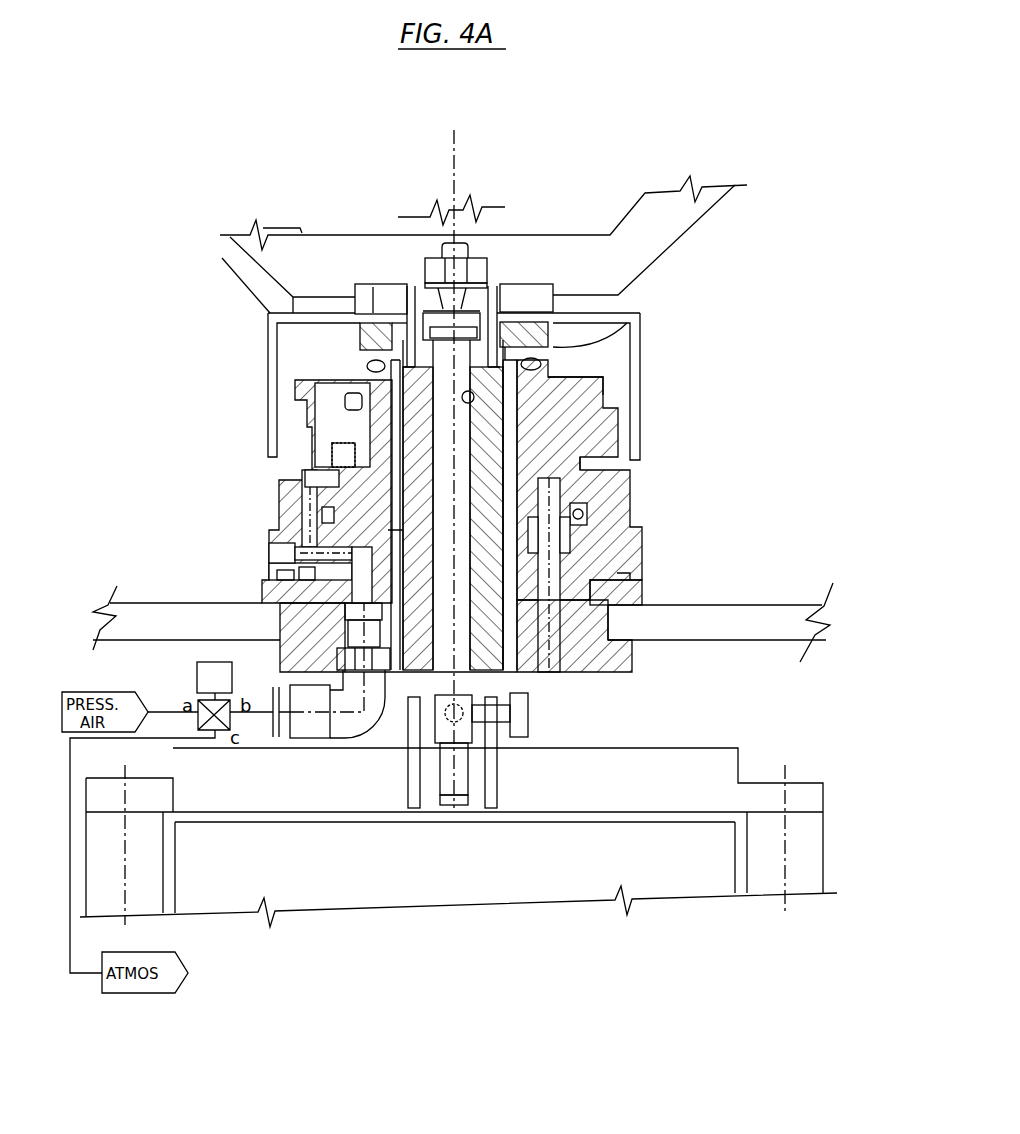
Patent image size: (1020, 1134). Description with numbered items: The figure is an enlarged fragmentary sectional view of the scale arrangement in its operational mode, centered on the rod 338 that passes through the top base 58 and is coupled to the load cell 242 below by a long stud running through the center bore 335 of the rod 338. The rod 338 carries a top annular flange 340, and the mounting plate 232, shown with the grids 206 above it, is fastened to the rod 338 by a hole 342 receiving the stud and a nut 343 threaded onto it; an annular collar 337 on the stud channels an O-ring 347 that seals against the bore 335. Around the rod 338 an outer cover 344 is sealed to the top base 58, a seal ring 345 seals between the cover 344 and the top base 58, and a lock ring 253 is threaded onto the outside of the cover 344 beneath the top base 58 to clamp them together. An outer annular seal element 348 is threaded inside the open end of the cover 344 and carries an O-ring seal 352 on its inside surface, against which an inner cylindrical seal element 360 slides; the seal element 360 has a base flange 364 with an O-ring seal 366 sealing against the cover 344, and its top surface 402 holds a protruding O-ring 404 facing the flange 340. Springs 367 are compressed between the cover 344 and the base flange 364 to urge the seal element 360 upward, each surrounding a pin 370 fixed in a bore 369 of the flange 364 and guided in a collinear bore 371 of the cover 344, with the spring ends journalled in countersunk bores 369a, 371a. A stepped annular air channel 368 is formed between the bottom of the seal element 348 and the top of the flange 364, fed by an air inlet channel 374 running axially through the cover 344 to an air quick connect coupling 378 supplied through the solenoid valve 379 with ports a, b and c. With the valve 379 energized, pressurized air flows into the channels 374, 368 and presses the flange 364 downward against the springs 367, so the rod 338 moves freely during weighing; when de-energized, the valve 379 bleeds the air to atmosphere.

The grids 206 is at (700, 222).
The protruding O-ring 404 is at (303, 322).
The O-ring seal 352 is at (340, 372).
The outer annular seal element 348 is at (352, 440).
The top annular flange 340 is at (636, 316).
The nut 343 is at (418, 363).
The annular collar 337 is at (398, 357).
The top surface 402 is at (373, 287).
The hole 342 is at (464, 290).
The O-ring 347 is at (387, 378).
The base flange 364 is at (618, 467).
The mounting plate 232 is at (505, 347).
The center bore 335 is at (497, 400).
The rod 338 is at (492, 402).
The stepped annular air channel 368 is at (612, 430).
The outer cover 344 is at (598, 503).
The O-ring seal 366 is at (562, 548).
The springs 367 is at (585, 538).
The pin 370 is at (570, 560).
The seal ring 345 is at (635, 598).
The bore 369 is at (342, 428).
The countersunk bore 369a is at (330, 418).
The inner cylindrical seal element 360 is at (537, 522).
The air inlet channel 374 is at (296, 532).
The lock ring 253 is at (625, 672).
The top base 58 is at (797, 605).
The load cell 242 is at (717, 773).
The bore 371 is at (543, 660).
The countersunk bore 371a is at (525, 640).
The air quick connect coupling 378 is at (310, 738).
The solenoid valve 379 is at (195, 680).